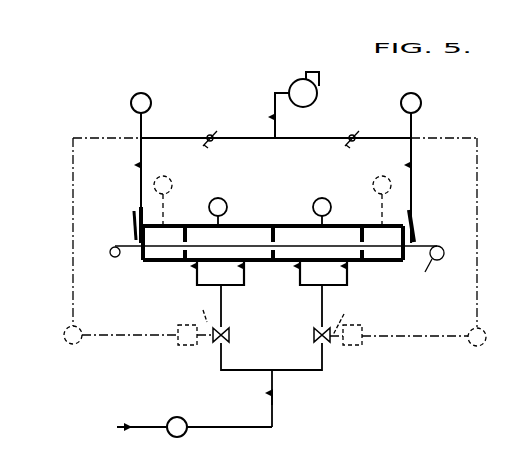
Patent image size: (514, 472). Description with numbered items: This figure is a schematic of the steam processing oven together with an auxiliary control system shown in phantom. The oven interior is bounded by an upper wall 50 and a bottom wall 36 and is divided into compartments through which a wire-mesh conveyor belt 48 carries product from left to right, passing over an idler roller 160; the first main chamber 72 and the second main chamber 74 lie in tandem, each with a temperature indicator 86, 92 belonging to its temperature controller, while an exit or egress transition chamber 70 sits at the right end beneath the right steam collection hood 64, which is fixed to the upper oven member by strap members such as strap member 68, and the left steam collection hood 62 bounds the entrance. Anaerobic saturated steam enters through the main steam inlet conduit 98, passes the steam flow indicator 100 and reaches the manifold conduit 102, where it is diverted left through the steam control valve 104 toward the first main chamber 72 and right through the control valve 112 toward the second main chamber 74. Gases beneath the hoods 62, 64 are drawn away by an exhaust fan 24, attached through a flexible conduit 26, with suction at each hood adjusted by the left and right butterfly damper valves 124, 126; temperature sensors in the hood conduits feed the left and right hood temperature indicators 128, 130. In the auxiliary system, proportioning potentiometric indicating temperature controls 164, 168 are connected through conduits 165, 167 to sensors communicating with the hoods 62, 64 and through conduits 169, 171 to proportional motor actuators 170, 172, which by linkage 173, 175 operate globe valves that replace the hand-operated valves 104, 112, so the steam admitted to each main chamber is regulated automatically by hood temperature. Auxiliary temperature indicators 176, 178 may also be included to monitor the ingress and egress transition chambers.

The exhaust fan 24 is at (304, 79).
The flexible conduit 26 is at (275, 99).
The bottom wall 36 is at (258, 262).
The conveyor belt 48 is at (112, 258).
The upper wall 50 is at (250, 226).
The left steam collection hood 62 is at (133, 212).
The right steam collection hood 64 is at (418, 219).
The strap member 68 is at (167, 236).
The exit or egress transition chamber 70 is at (381, 236).
The first main chamber 72 is at (227, 236).
The second main chamber 74 is at (305, 236).
The temperature indicator 86 is at (221, 198).
The temperature indicator 92 is at (324, 198).
The main steam inlet conduit 98 is at (141, 430).
The steam flow indicator 100 is at (182, 435).
The manifold conduit 102 is at (248, 370).
The steam control valve 104 is at (228, 333).
The control valve 112 is at (317, 339).
The left butterfly damper valve 124 is at (211, 134).
The right butterfly damper valve 126 is at (352, 134).
The left hood temperature indicator 128 is at (147, 95).
The right hood temperature indicator 130 is at (420, 97).
The idler roller 160 is at (111, 248).
The proportioning potentiometric indicating temperature control 164 is at (66, 343).
The conduit 165 is at (73, 207).
The conduit 167 is at (477, 292).
The proportioning potentiometric indicating temperature control 168 is at (475, 348).
The conduit 169 is at (140, 338).
The proportional motor actuator 170 is at (178, 343).
The conduit 171 is at (405, 338).
The proportional motor actuator 172 is at (355, 346).
The linkage 173 is at (197, 308).
The linkage 175 is at (349, 313).
The auxiliary temperature indicator 176 is at (175, 168).
The auxiliary temperature indicator 178 is at (382, 176).